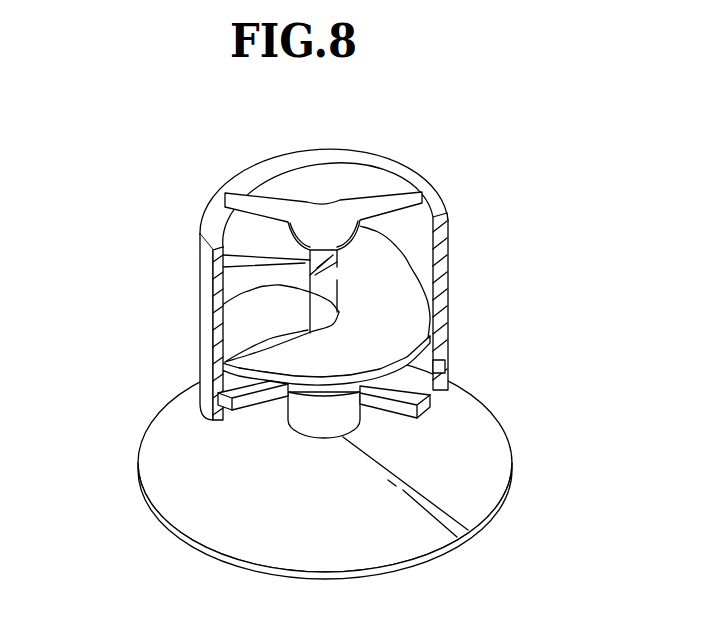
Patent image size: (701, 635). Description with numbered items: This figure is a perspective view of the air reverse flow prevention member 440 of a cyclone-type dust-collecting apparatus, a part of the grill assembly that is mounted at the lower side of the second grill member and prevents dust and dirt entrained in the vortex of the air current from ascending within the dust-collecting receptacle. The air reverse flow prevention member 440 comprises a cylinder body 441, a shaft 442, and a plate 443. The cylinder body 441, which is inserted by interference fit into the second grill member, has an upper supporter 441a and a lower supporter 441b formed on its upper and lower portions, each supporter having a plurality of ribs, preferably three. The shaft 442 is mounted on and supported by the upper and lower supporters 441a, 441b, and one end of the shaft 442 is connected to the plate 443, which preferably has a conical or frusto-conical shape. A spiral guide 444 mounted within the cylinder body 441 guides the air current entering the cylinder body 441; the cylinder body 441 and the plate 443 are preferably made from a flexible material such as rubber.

The air reverse flow prevention member 440 is at (185, 140).
The cylinder body 441 is at (447, 248).
The upper supporter 441a is at (387, 193).
The lower supporter 441b is at (209, 409).
The shaft 442 is at (218, 310).
The plate 443 is at (203, 497).
The spiral guide 444 is at (397, 308).